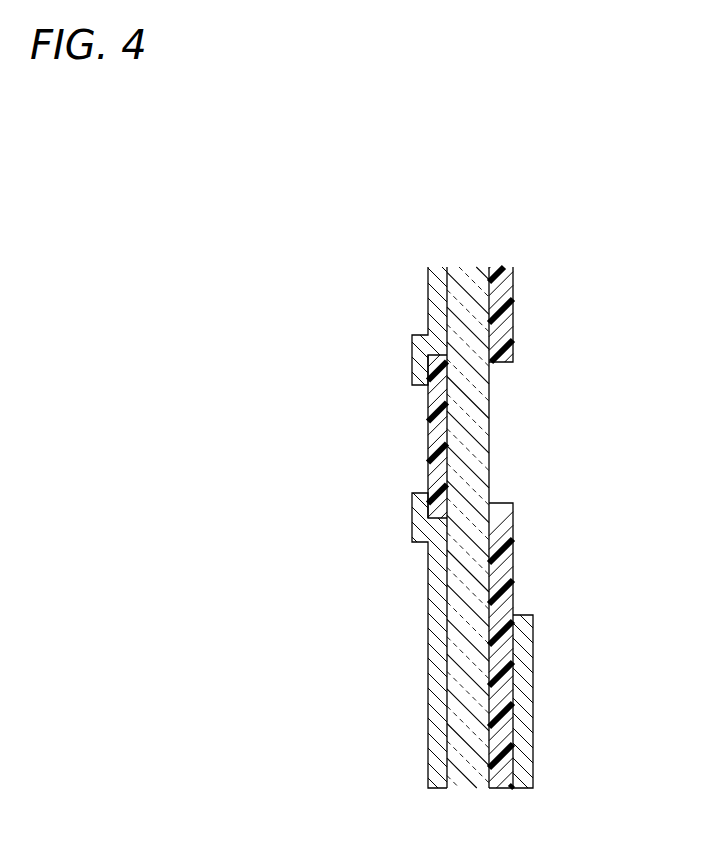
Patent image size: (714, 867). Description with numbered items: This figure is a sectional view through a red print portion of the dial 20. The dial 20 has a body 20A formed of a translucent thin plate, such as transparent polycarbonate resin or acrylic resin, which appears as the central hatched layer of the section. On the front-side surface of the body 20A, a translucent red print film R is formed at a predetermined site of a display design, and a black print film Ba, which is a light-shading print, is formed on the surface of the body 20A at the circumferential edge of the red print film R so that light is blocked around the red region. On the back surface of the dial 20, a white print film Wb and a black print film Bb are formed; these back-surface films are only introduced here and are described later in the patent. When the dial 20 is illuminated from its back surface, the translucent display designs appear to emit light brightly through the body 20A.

The dial 20 is at (472, 250).
The body 20A is at (467, 737).
The black print film Ba is at (440, 300).
The black print film Bb is at (525, 707).
The translucent red print film R is at (440, 446).
The white print film Wb is at (507, 338).